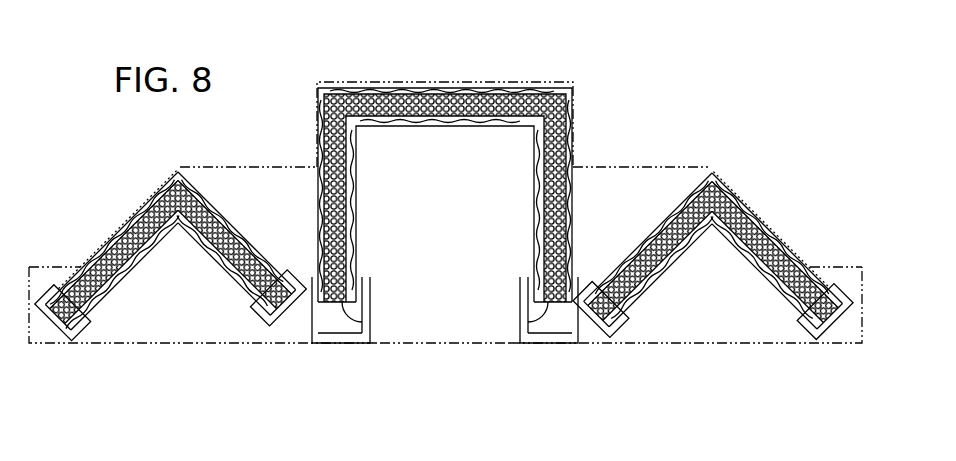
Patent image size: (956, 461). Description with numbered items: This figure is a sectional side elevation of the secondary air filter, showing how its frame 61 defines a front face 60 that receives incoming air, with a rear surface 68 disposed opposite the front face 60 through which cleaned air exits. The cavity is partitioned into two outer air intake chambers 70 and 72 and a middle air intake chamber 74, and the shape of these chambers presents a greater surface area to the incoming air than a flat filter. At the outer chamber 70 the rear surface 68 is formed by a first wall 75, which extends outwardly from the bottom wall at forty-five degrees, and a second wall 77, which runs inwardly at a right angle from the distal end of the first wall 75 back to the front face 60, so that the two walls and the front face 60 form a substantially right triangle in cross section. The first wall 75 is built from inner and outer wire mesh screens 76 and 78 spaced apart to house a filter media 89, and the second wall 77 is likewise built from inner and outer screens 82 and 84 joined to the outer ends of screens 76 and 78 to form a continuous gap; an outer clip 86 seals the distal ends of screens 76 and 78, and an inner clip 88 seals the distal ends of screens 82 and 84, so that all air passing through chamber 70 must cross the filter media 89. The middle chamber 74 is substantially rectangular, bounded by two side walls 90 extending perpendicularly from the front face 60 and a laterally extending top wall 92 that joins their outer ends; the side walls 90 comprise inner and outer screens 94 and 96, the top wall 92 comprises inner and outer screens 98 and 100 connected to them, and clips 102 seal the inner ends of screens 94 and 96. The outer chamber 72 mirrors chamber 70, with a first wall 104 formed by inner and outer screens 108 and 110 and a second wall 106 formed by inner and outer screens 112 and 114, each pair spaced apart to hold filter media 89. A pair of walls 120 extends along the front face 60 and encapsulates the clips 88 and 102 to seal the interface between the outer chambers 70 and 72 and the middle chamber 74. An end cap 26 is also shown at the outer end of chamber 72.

The end cap 26 is at (835, 330).
The front face 60 is at (437, 350).
The frame 61 is at (677, 163).
The rear surface 68 is at (528, 82).
The outer air intake chamber 70 is at (201, 322).
The outer air intake chamber 72 is at (717, 316).
The middle air intake chamber 74 is at (453, 312).
The first outer wall 75 is at (83, 263).
The inner wire mesh screen 76 is at (127, 276).
The second outer wall 77 is at (205, 195).
The outer wire mesh screen 78 is at (112, 236).
The inner wire mesh screen 82 is at (222, 264).
The outer wire mesh screen 84 is at (238, 238).
The outer clip 86 is at (60, 335).
The inner clip 88 is at (300, 333).
The filter media 89 is at (145, 214).
The side wall 90 is at (316, 122).
The top wall 92 is at (475, 82).
The inner wire mesh screen 94 is at (357, 200).
The outer wire mesh screen 96 is at (316, 216).
The inner screen 98 is at (406, 122).
The outer screen 100 is at (422, 85).
The clip 102 is at (364, 310).
The first wall 104 is at (800, 252).
The second wall 106 is at (688, 193).
The inner wire mesh screen 108 is at (746, 260).
The outer wire mesh screen 110 is at (766, 222).
The inner wire mesh screen 112 is at (650, 288).
The outer wire mesh screen 114 is at (656, 242).
The wall 120 is at (372, 333).